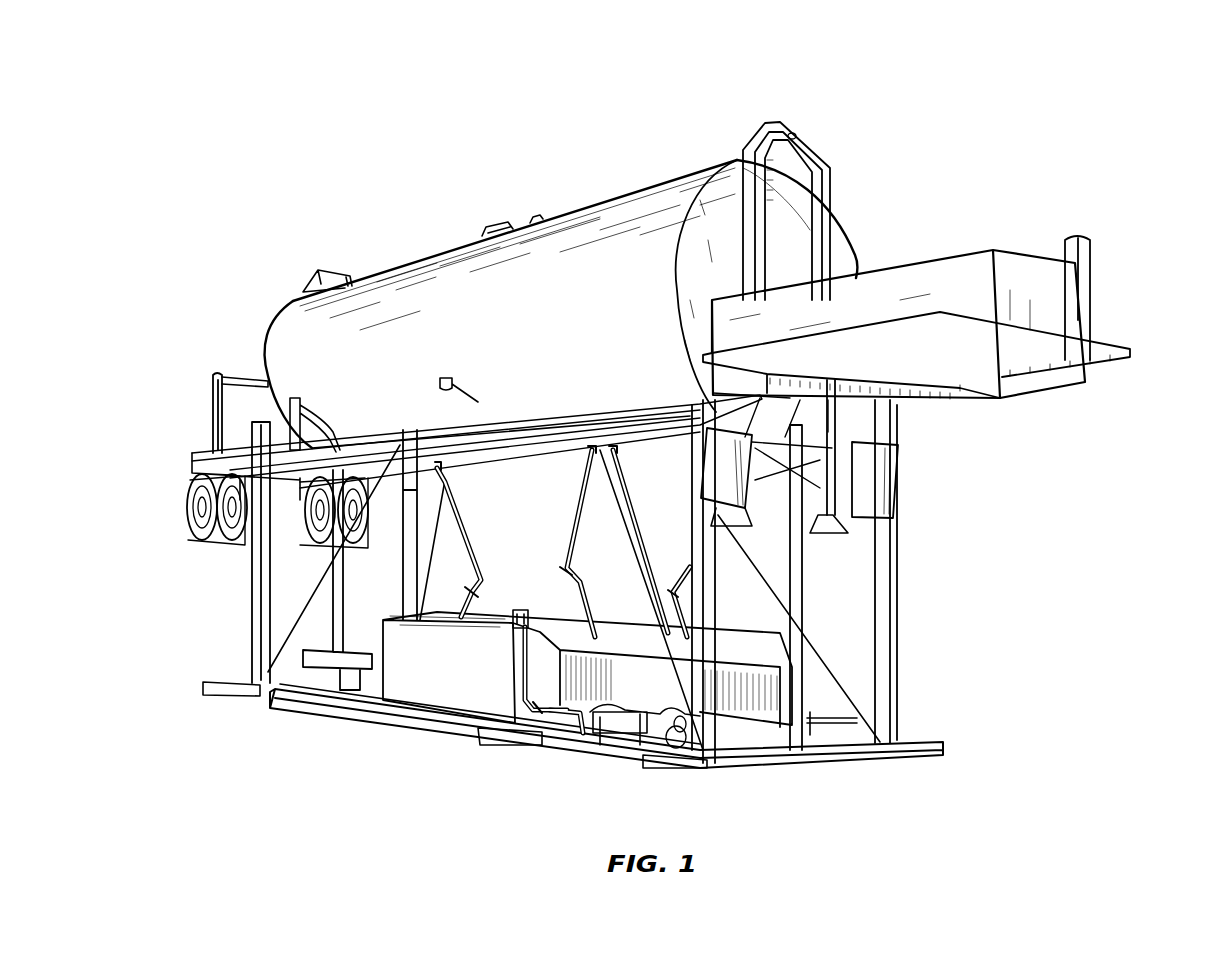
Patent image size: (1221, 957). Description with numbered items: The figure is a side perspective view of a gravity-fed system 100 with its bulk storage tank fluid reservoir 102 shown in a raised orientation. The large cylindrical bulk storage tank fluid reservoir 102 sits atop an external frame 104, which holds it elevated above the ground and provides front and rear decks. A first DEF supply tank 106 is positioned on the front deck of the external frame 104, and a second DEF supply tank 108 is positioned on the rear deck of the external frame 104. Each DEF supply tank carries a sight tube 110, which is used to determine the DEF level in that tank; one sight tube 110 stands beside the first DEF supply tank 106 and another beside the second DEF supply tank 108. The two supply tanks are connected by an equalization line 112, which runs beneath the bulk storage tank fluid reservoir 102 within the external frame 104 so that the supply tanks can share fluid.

The gravity-fed system 100 is at (1033, 98).
The bulk storage tank fluid reservoir 102 is at (636, 192).
The external frame 104 is at (900, 672).
The first DEF supply tank 106 is at (941, 259).
The second DEF supply tank 108 is at (220, 413).
The sight tube 110 is at (1094, 291).
The equalization line 112 is at (493, 440).